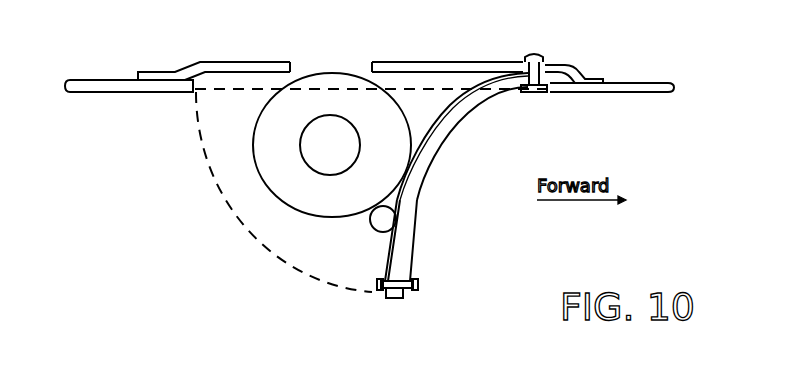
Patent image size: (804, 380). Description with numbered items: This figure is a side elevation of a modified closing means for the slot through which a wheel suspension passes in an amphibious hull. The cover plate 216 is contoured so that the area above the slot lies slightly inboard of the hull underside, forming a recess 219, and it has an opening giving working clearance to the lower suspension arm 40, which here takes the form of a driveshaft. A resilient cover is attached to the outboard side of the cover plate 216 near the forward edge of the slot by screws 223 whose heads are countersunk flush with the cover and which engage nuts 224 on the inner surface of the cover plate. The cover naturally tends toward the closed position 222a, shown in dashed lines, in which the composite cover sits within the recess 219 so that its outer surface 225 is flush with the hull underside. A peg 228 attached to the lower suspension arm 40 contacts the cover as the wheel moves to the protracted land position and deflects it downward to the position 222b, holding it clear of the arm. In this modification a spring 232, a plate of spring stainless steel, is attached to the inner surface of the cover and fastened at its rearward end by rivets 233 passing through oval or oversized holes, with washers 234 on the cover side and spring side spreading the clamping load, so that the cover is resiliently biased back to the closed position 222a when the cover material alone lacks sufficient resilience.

The lower suspension arm 40 is at (310, 115).
The cover plate 216 is at (441, 62).
The recess 219 is at (267, 80).
The closed position 222a is at (233, 78).
The deflected position 222b is at (425, 155).
The screws 223 is at (542, 92).
The nuts 224 is at (536, 54).
The outer surface 225 is at (412, 253).
The peg 228 is at (371, 221).
The spring 232 is at (386, 299).
The rivets 233 is at (410, 288).
The washers 234 is at (378, 291).